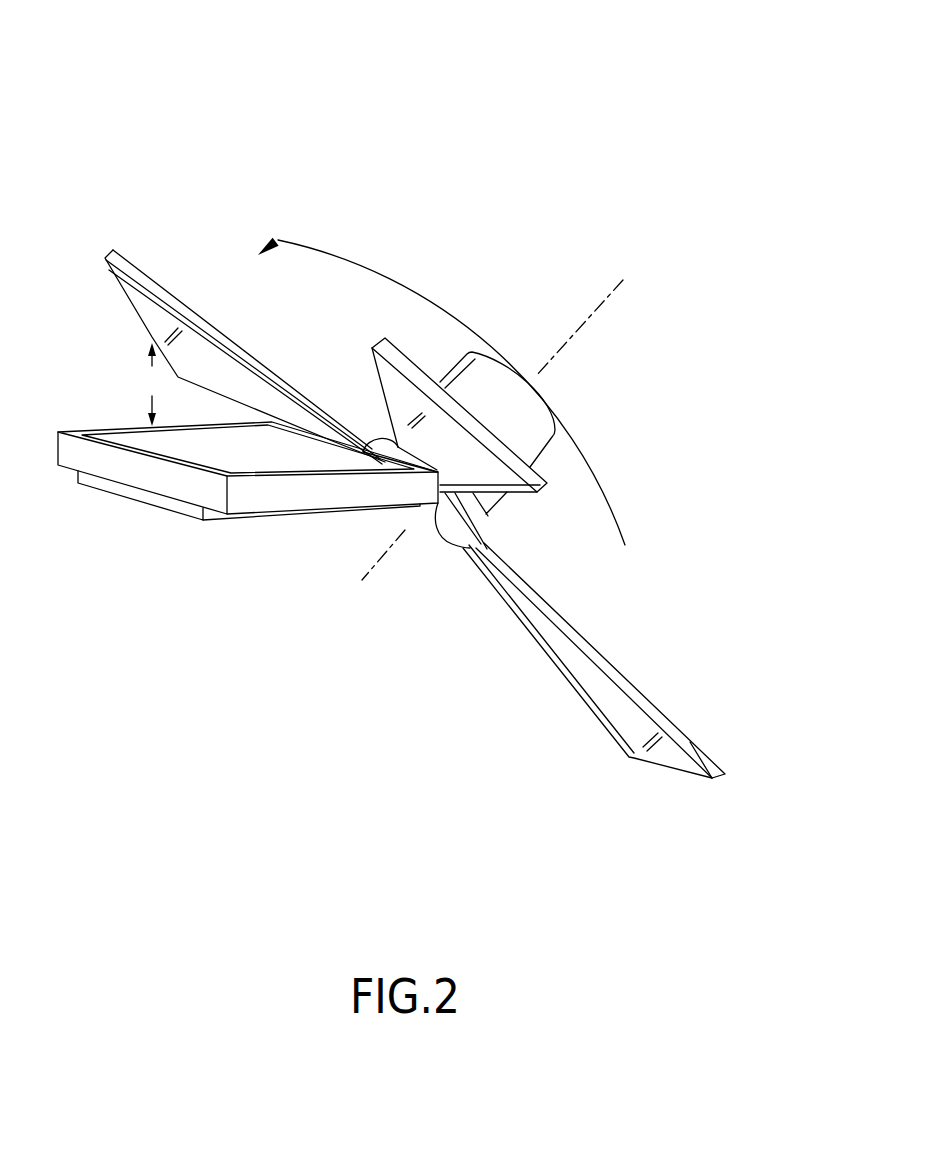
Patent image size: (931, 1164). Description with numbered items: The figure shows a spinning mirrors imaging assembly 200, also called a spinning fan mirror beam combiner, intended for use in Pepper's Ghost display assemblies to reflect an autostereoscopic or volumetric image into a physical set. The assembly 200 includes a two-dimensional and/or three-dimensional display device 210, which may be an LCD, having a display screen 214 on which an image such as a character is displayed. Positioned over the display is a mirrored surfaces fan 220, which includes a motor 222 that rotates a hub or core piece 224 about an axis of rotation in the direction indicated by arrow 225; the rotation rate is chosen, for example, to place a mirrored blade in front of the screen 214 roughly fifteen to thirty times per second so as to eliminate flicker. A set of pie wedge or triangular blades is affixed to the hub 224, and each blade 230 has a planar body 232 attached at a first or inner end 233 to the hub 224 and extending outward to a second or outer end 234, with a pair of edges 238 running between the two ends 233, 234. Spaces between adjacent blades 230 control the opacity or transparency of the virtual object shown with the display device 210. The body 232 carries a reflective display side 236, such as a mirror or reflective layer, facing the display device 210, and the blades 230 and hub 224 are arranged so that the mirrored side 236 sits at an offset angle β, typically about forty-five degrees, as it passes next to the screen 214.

The spinning mirrors imaging assembly 200 is at (194, 130).
The display device 210 is at (207, 546).
The display screen 214 is at (244, 468).
The mirrored surfaces fan 220 is at (470, 660).
The motor 222 is at (582, 429).
The hub 224 is at (441, 541).
The arrow 225 is at (388, 272).
The blade 230 is at (653, 797).
The blade body 232 is at (570, 698).
The inner end 233 is at (487, 546).
The outer end 234 is at (690, 777).
The display side 236 is at (588, 678).
The edges 238 is at (690, 740).